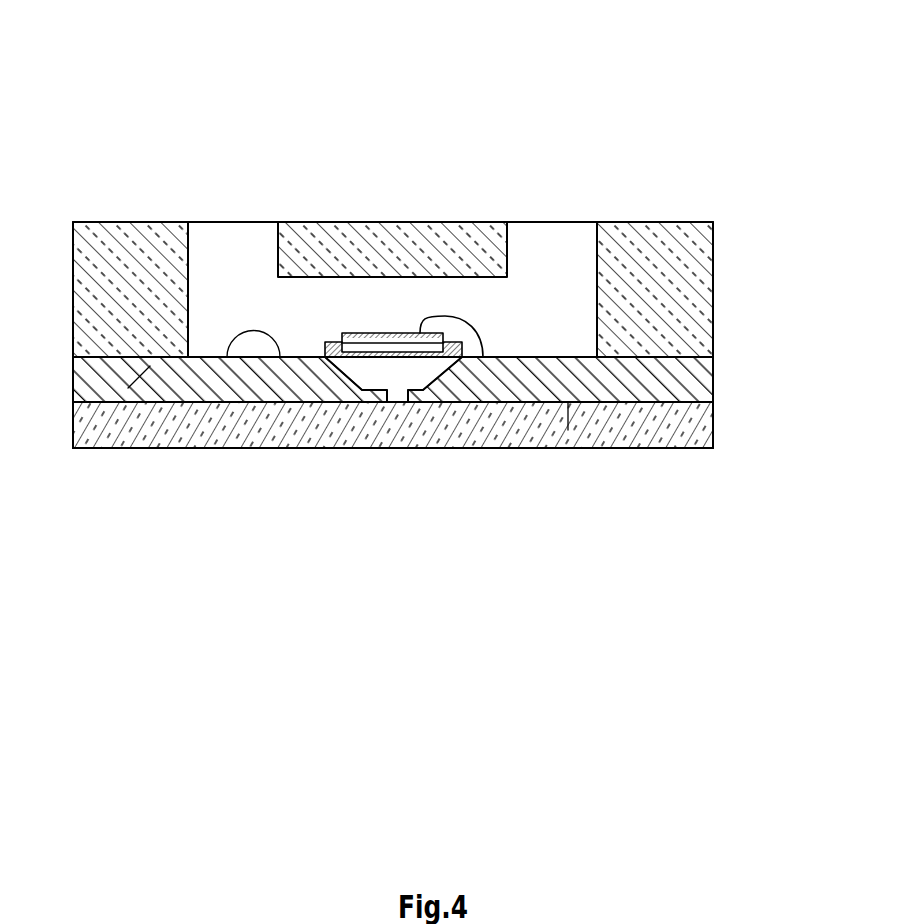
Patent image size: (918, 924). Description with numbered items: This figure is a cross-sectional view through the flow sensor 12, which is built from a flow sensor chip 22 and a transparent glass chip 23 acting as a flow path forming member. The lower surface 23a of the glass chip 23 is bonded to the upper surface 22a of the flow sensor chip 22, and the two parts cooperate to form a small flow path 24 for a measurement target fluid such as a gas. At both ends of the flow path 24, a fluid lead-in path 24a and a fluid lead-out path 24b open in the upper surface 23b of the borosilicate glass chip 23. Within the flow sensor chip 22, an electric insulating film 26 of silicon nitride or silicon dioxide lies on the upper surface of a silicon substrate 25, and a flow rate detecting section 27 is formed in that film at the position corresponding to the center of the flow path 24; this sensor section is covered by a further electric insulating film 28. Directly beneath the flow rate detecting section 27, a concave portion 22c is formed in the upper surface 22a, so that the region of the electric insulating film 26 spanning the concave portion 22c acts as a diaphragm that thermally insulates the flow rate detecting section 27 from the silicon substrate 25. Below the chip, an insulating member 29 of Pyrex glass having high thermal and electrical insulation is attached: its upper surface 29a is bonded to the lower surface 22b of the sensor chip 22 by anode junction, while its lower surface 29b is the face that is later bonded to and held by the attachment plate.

The flow sensor 12 is at (302, 88).
The flow sensor chip 22 is at (207, 385).
The upper surface of the flow sensor chip 22a is at (280, 357).
The lower surface of the sensor chip 22b is at (568, 430).
The concave portion 22c is at (345, 380).
The glass chip 23 is at (126, 222).
The lower surface of the glass chip 23a is at (713, 373).
The upper surface of the glass chip 23b is at (647, 222).
The flow path 24 is at (383, 312).
The fluid lead-in path 24a is at (232, 240).
The fluid lead-out path 24b is at (557, 250).
The silicon substrate 25 is at (128, 388).
The electric insulating film 26 is at (407, 357).
The flow rate detecting section 27 is at (390, 340).
The electric insulating film 28 is at (480, 357).
The insulating member 29 is at (648, 433).
The upper surface of the insulating member 29a is at (713, 385).
The lower surface of the insulating member 29b is at (683, 450).